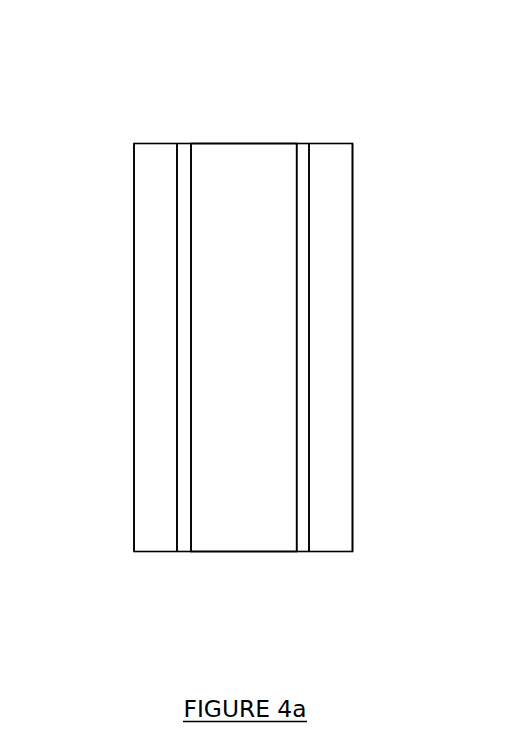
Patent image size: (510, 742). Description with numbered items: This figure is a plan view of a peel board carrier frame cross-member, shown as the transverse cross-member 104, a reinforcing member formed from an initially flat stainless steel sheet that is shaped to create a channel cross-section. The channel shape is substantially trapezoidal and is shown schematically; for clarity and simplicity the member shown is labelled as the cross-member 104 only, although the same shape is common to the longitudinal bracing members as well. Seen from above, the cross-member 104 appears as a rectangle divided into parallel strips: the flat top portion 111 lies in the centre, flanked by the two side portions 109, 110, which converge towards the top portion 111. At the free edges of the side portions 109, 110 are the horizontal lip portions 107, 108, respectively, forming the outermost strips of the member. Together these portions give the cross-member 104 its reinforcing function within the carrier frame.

The transverse cross-member 104 is at (243, 280).
The horizontal lip portion 107 is at (147, 269).
The horizontal lip portion 108 is at (338, 275).
The side portion 109 is at (185, 373).
The side portion 110 is at (302, 387).
The flat top portion 111 is at (235, 528).